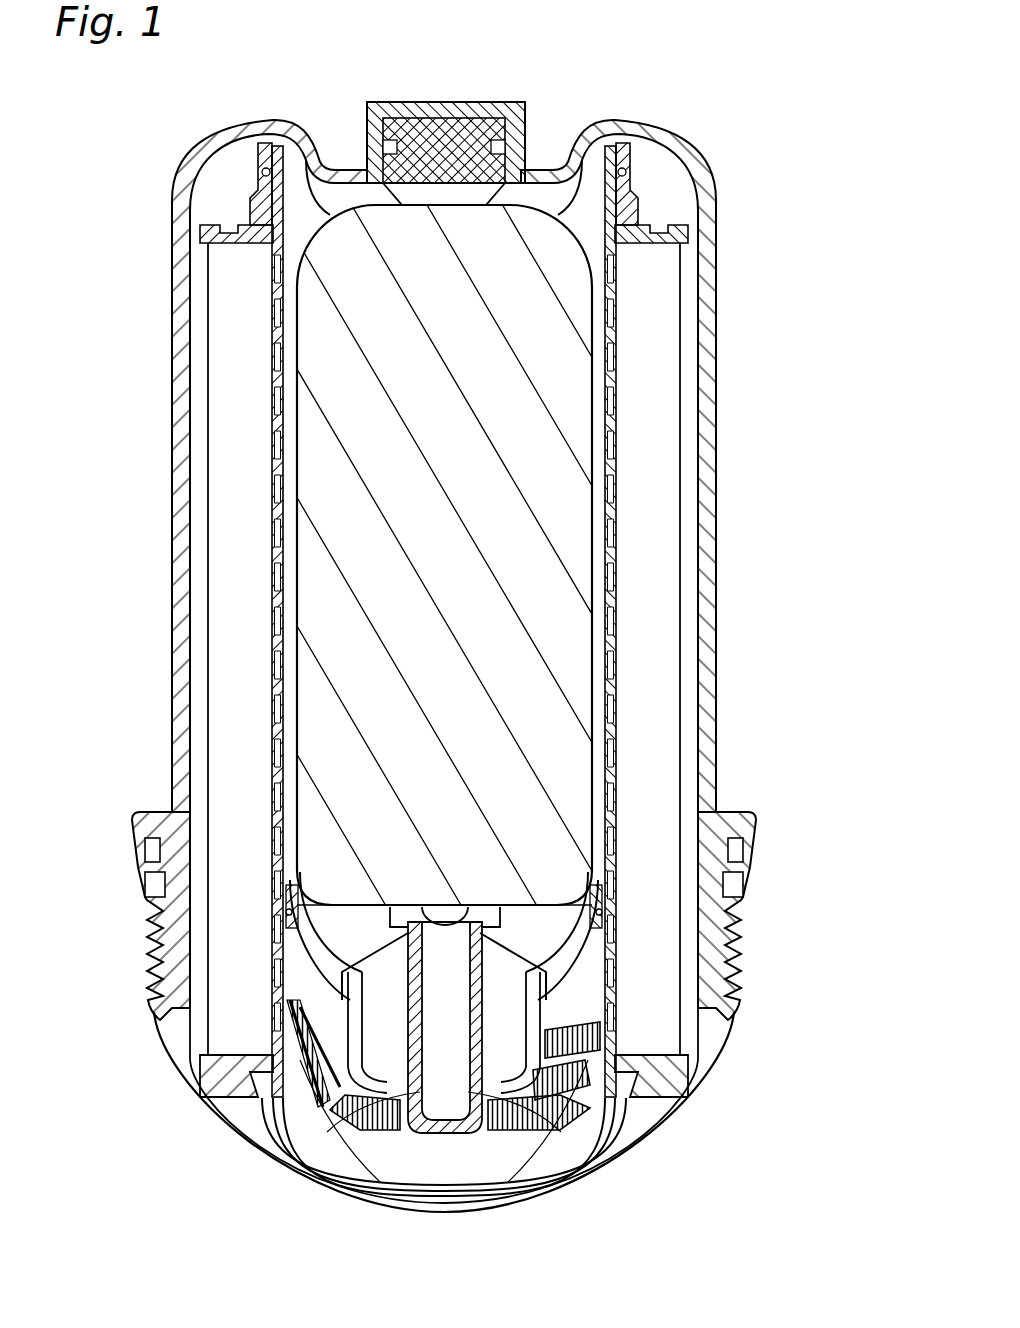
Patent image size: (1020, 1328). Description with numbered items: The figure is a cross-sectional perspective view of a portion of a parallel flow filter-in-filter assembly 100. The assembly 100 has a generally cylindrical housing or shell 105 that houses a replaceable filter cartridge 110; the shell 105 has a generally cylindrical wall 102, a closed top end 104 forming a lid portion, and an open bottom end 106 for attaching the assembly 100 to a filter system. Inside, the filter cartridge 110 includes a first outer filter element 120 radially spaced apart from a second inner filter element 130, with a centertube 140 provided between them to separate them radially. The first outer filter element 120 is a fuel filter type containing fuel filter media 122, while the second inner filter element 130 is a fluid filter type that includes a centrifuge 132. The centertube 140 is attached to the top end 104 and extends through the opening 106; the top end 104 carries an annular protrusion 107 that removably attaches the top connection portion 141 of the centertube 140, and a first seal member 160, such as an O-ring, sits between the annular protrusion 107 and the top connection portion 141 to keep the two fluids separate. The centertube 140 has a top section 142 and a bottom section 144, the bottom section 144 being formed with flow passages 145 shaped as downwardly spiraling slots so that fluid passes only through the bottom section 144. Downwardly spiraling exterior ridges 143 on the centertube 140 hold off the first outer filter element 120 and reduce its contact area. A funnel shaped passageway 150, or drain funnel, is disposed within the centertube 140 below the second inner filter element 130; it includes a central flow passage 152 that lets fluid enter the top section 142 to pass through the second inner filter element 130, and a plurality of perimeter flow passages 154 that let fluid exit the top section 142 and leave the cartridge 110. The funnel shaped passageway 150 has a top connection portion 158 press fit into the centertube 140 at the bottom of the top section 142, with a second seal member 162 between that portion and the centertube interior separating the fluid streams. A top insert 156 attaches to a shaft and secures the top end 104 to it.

The parallel flow filter-in-filter assembly 100 is at (766, 122).
The cylindrical wall 102 is at (185, 385).
The closed top end 104 is at (547, 163).
The housing or shell 105 is at (177, 213).
The open bottom end 106 is at (180, 1022).
The annular protrusion 107 is at (267, 160).
The filter cartridge 110 is at (696, 306).
The first outer filter element 120 is at (682, 393).
The fuel filter media 122 is at (657, 447).
The second inner filter element 130 is at (296, 562).
The centrifuge 132 is at (328, 610).
The centertube 140 is at (340, 153).
The top connection portion 141 is at (313, 157).
The top section 142 is at (275, 305).
The exterior ridges 143 is at (275, 520).
The bottom section 144 is at (275, 985).
The flow passages 145 is at (420, 1150).
The funnel shaped passageway 150 is at (323, 1100).
The central flow passage 152 is at (560, 952).
The perimeter flow passages 154 is at (330, 945).
The top insert 156 is at (463, 107).
The top connection portion 158 is at (612, 878).
The first seal member 160 is at (623, 160).
The second seal member 162 is at (630, 895).